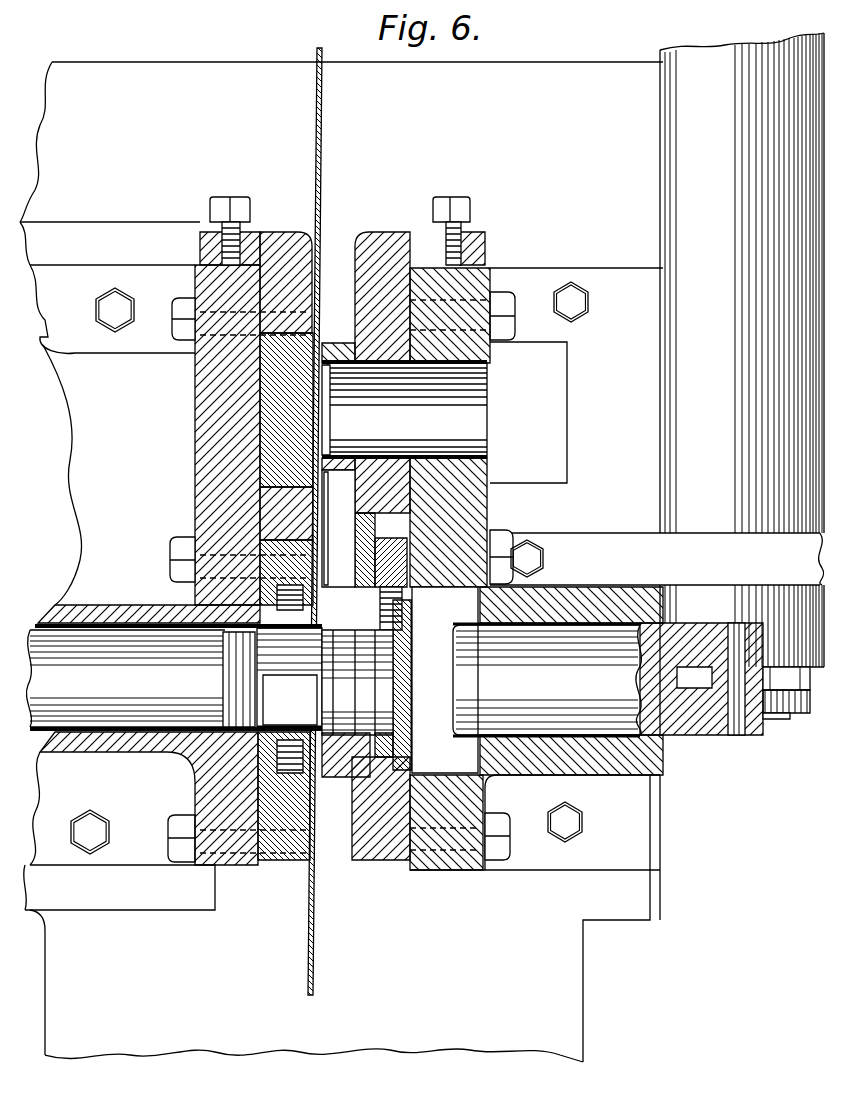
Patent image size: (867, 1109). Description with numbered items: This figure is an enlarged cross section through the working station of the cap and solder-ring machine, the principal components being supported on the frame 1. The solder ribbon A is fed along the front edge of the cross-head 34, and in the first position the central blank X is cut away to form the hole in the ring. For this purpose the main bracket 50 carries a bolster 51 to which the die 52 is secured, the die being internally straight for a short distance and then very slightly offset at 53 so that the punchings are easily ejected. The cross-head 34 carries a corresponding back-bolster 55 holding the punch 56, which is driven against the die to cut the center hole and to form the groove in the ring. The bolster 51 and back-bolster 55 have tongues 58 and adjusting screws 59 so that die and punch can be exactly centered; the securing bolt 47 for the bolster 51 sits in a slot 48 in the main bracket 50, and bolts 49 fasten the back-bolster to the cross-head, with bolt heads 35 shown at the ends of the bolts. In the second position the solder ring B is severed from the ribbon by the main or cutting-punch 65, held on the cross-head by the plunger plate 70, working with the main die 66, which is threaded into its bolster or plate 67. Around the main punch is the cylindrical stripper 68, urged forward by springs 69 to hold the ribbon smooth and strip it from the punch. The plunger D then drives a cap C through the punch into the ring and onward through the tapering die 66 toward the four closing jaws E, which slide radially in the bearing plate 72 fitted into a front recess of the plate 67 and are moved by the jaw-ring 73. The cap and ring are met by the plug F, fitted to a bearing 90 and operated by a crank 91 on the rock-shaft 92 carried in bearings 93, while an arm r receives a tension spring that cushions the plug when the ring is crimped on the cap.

The frame 1 is at (341, 562).
The ribbon A is at (317, 93).
The cross-head 34 is at (182, 435).
The bolt head 35 is at (326, 562).
The securing bolt 47 is at (312, 242).
The slot 48 is at (491, 295).
The bolts 49 is at (172, 323).
The main bracket 50 is at (470, 346).
The bolster 51 is at (386, 250).
The die 52 is at (343, 342).
The offset 53 is at (398, 436).
The back-bolster 55 is at (274, 247).
The punch 56 is at (261, 413).
The tongues 58 is at (201, 234).
The adjusting screws 59 is at (222, 200).
The main or cutting-punch 65 is at (256, 602).
The main die 66 is at (330, 757).
The bolster or plate 67 is at (362, 862).
The cylindrical stripper 68 is at (332, 780).
The springs 69 is at (254, 764).
The plunger plate 70 is at (284, 861).
The bearing plate 72 is at (413, 766).
The jaw-ring 73 is at (361, 570).
The bearing 90 is at (623, 770).
The crank 91 is at (701, 679).
The rock-shaft 92 is at (780, 716).
The bearings 93 is at (742, 384).
The central blank X is at (404, 409).
The plunger D is at (140, 678).
The solder ring B is at (289, 677).
The caps or disks C is at (289, 677).
The closing jaws E is at (357, 682).
The plug F is at (547, 680).
The arm r is at (657, 557).